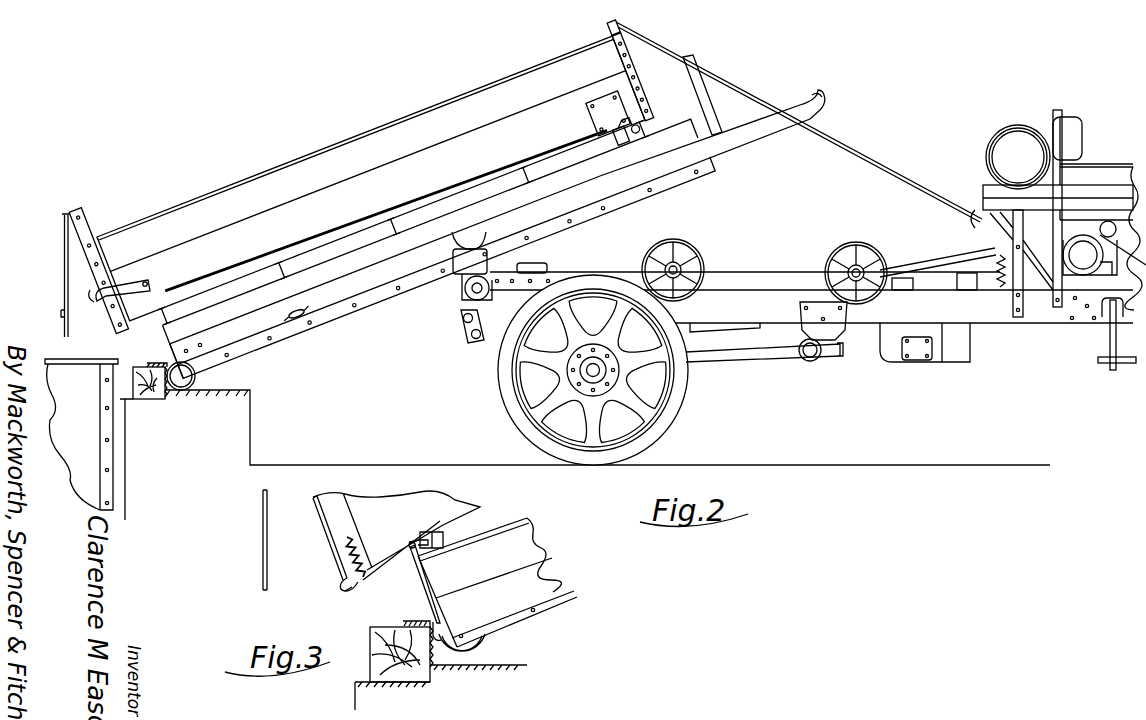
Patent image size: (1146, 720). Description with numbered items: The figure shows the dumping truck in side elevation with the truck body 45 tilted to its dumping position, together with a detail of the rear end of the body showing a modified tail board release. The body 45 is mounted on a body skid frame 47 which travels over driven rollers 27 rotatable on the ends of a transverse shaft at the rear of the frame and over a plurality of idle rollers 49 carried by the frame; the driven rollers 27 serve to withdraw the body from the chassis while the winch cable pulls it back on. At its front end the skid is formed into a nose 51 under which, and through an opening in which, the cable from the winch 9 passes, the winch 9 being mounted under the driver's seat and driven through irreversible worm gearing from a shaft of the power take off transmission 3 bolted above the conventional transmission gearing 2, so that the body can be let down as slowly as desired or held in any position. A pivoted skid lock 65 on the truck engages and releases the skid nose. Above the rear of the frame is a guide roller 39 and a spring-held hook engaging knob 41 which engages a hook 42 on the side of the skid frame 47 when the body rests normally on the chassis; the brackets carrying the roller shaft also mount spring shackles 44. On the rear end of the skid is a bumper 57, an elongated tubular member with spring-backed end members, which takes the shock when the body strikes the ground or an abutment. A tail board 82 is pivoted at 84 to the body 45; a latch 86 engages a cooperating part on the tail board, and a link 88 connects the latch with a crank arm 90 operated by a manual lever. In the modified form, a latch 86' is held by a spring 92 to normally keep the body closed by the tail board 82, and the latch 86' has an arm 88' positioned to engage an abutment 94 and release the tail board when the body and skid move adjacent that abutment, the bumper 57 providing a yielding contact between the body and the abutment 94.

In FIG. 2, the transmission gearing 2 is at (957, 364).
In FIG. 2, the power take off transmission 3 is at (930, 284).
In FIG. 2, the winch 9 is at (1084, 262).
In FIG. 2, the driven rollers 27 is at (463, 294).
In FIG. 2, the guide roller 39 is at (548, 270).
In FIG. 2, the hook engaging knob 41 is at (505, 243).
In FIG. 2, the hook 42 is at (302, 322).
In FIG. 2, the spring shackles 44 is at (469, 340).
In FIG. 2, the truck body 45 is at (170, 204).
In FIG. 2, the body skid frame 47 is at (757, 138).
In FIG. 2, the idle rollers 49 is at (690, 247).
In FIG. 2, the nose 51 is at (826, 100).
In FIG. 2, the bumper 57 is at (200, 378).
In FIG. 3, the bumper 57 is at (488, 645).
In FIG. 2, the skid lock 65 is at (960, 259).
In FIG. 2, the tail board 82 is at (64, 262).
In FIG. 3, the tail board 82 is at (263, 538).
In FIG. 2, the pivot 84 is at (72, 214).
In FIG. 2, the latch 86 is at (140, 277).
In FIG. 2, the link 88 is at (386, 210).
In FIG. 2, the crank arm 90 is at (617, 142).
In FIG. 3, the spring 92 is at (358, 550).
In FIG. 3, the latch 86' is at (375, 583).
In FIG. 3, the arm 88' is at (415, 584).
In FIG. 3, the abutment 94 is at (372, 648).